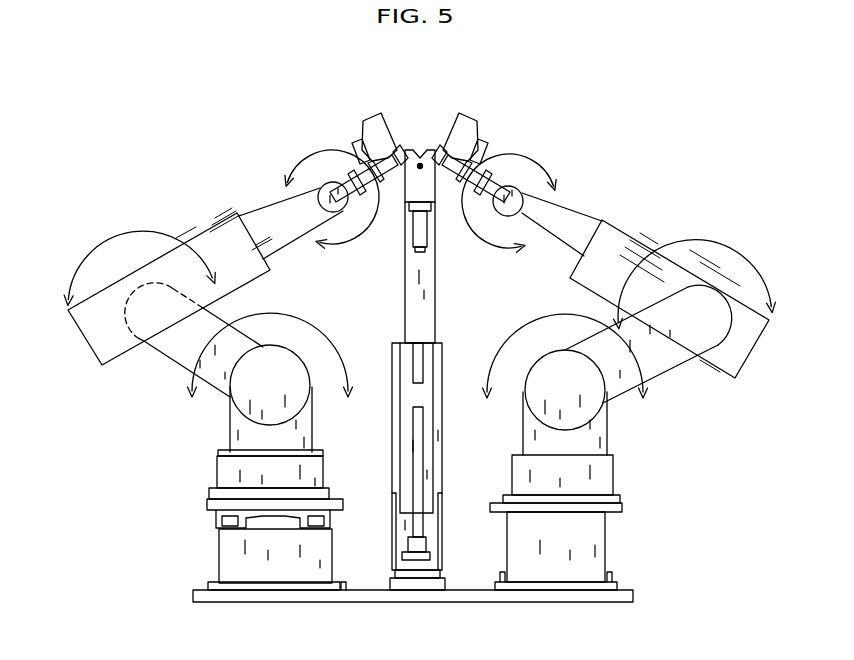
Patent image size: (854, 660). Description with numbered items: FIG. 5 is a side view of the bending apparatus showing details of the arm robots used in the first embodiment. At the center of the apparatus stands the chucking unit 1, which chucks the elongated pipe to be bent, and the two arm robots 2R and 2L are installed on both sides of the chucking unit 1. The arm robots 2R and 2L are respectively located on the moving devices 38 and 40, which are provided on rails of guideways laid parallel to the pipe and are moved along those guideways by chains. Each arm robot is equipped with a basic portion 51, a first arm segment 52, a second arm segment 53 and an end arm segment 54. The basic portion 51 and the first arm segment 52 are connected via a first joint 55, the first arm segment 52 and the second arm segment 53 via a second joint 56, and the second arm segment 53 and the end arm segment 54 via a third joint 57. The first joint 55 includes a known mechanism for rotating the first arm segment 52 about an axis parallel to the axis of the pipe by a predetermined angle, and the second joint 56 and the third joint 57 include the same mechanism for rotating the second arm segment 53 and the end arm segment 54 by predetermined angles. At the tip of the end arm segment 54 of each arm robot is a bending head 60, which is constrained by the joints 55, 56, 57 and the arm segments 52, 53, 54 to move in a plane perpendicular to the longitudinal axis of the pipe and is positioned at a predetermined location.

The chucking unit 1 is at (426, 156).
The arm robot 2R is at (157, 220).
The arm robot 2L is at (673, 217).
The moving device 38 is at (623, 500).
The moving device 40 is at (215, 500).
The basic portion 51 is at (233, 420).
The first arm segment 52 is at (180, 355).
The second arm segment 53 is at (225, 247).
The end arm segment 54 is at (337, 162).
The first joint 55 is at (300, 388).
The second joint 56 is at (125, 326).
The third joint 57 is at (570, 162).
The bending head 60 is at (384, 135).